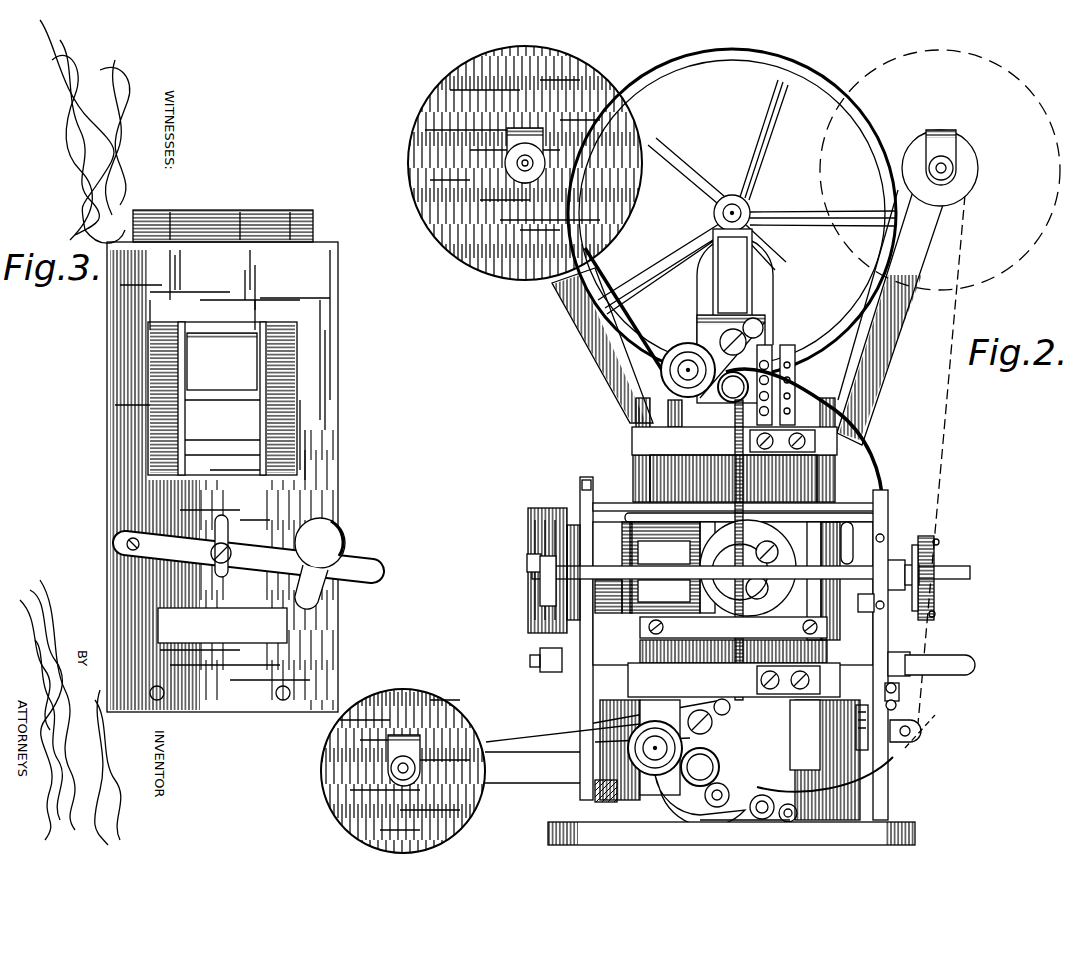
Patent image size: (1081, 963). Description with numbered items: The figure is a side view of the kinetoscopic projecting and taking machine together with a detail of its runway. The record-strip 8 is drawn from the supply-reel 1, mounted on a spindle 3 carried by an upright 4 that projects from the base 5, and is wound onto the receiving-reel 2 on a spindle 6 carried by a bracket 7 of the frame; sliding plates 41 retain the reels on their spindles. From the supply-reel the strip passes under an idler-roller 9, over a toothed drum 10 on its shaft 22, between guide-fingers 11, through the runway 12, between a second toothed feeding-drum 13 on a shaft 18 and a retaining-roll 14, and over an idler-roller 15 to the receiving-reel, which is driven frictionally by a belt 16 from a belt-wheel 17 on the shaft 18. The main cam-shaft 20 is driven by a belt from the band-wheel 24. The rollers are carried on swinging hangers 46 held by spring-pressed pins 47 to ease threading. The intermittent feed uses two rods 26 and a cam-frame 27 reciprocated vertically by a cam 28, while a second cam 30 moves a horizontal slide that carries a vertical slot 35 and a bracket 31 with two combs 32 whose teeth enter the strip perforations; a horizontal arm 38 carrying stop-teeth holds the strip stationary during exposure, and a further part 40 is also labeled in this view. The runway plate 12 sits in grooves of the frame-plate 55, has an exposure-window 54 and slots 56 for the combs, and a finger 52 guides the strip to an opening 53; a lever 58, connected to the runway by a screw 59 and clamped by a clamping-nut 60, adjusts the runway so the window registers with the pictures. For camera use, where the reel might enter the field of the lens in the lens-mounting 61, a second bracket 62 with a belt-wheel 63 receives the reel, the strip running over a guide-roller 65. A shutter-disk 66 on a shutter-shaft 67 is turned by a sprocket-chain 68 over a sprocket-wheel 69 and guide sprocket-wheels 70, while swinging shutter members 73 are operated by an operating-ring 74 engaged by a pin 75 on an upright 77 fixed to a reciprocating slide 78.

In FIG. 2, the supply-reel 1 is at (525, 163).
In FIG. 2, the receiving-reel 2 is at (403, 771).
In FIG. 2, the spindle 3 is at (534, 160).
In FIG. 2, the upright 4 is at (575, 344).
In FIG. 2, the base 5 is at (915, 838).
In FIG. 2, the spindle 6 is at (410, 765).
In FIG. 2, the bracket 7 is at (530, 784).
In FIG. 2, the record-strip 8 is at (664, 318).
In FIG. 2, the idler-roller 9 is at (685, 343).
In FIG. 2, the toothed drum 10 is at (744, 384).
In FIG. 2, the guide-fingers 11 is at (778, 380).
In FIG. 3, the runway 12 is at (313, 216).
In FIG. 2, the runway 12 is at (888, 508).
In FIG. 2, the second toothed feeding-drum 13 is at (688, 808).
In FIG. 2, the retaining-roll 14 is at (722, 808).
In FIG. 2, the idler-roller 15 is at (598, 792).
In FIG. 2, the belt 16 is at (548, 738).
In FIG. 2, the belt-wheel 17 is at (705, 822).
In FIG. 2, the shaft 18 is at (679, 742).
In FIG. 2, the main cam-shaft 20 is at (776, 551).
In FIG. 2, the shaft 22 is at (734, 464).
In FIG. 2, the band-wheel 24 is at (694, 66).
In FIG. 2, the rods 26 is at (838, 418).
In FIG. 2, the cam-frame 27 is at (734, 657).
In FIG. 2, the cam 28 is at (748, 568).
In FIG. 2, the second cam 30 is at (665, 567).
In FIG. 2, the bracket 31 is at (910, 664).
In FIG. 2, the combs 32 is at (874, 600).
In FIG. 2, the vertical slot 35 is at (853, 535).
In FIG. 2, the horizontal arm 38 is at (901, 694).
In FIG. 2, the lever handle 40 is at (958, 674).
In FIG. 2, the sliding plates 41 is at (526, 128).
In FIG. 2, the swinging hangers 46 is at (744, 330).
In FIG. 2, the spring-pressed pins 47 is at (747, 340).
In FIG. 2, the finger 52 is at (899, 692).
In FIG. 3, the opening 53 is at (222, 625).
In FIG. 3, the exposure-window 54 is at (222, 361).
In FIG. 3, the frame-plate 55 is at (338, 428).
In FIG. 3, the slots 56 is at (180, 445).
In FIG. 3, the lever 58 is at (248, 554).
In FIG. 2, the lever 58 is at (880, 766).
In FIG. 3, the screw 59 is at (228, 552).
In FIG. 3, the clamping-nut 60 is at (320, 563).
In FIG. 2, the clamping-nut 60 is at (862, 706).
In FIG. 2, the lens-mounting 61 is at (599, 638).
In FIG. 2, the second bracket 62 is at (897, 318).
In FIG. 2, the belt-wheel 63 is at (980, 172).
In FIG. 2, the guide-roller 65 is at (914, 736).
In FIG. 2, the shutter-disk 66 is at (863, 468).
In FIG. 2, the shutter-shaft 67 is at (948, 572).
In FIG. 2, the sprocket-chain 68 is at (932, 536).
In FIG. 2, the sprocket-wheel 69 is at (934, 544).
In FIG. 2, the guide sprocket-wheels 70 is at (938, 542).
In FIG. 2, the shutter members 73 is at (528, 542).
In FIG. 2, the operating-ring 74 is at (528, 512).
In FIG. 2, the pin 75 is at (527, 562).
In FIG. 2, the upright 77 is at (540, 583).
In FIG. 2, the reciprocating slide 78 is at (540, 658).